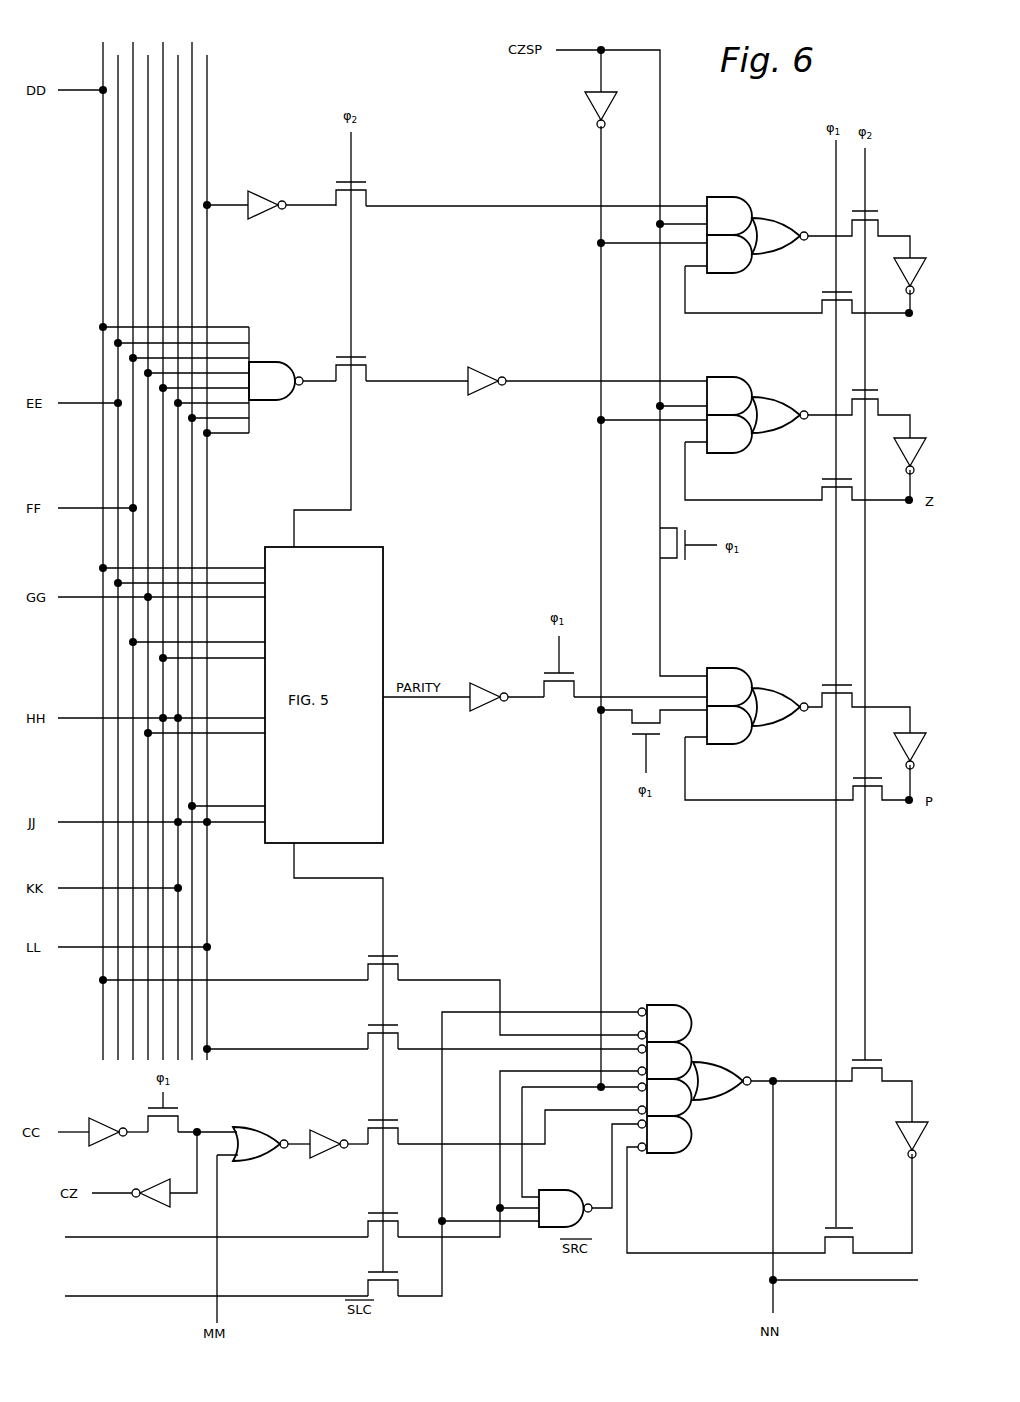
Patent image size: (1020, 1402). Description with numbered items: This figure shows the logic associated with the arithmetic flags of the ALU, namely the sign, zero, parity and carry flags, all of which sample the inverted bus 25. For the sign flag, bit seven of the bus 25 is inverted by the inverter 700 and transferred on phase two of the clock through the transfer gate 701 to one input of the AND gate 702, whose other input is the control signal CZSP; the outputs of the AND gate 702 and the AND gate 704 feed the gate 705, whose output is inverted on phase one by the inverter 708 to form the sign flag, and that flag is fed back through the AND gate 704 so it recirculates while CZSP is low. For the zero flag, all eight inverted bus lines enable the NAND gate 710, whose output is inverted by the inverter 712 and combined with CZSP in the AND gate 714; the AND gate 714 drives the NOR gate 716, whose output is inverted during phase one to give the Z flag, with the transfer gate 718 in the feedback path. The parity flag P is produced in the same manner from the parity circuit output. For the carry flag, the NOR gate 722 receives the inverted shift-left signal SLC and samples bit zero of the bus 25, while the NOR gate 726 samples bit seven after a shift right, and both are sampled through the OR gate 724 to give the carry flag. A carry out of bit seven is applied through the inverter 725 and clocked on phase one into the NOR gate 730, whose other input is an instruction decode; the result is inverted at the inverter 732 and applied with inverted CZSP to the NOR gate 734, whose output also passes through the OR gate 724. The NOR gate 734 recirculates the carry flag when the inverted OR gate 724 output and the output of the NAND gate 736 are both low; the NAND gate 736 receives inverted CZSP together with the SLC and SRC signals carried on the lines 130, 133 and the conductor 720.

The bus 25 is at (250, 108).
The inverter 700 is at (268, 202).
The transfer gate 701 is at (370, 183).
The AND gate 702 is at (728, 197).
The AND gate 704 is at (749, 264).
The OR gate 705 is at (780, 217).
The inverter 708 is at (879, 219).
The NAND gate 710 is at (272, 366).
The inverter 712 is at (487, 373).
The AND gate 714 is at (729, 378).
The NOR gate 716 is at (781, 398).
The transistor 718 is at (881, 398).
The conductor 720 is at (445, 1285).
The NOR gate 722 is at (665, 1023).
The OR gate 724 is at (715, 1066).
The inverter 725 is at (104, 1126).
The NOR gate 726 is at (665, 1060).
The NOR gate 730 is at (254, 1160).
The inverter 732 is at (318, 1130).
The NOR gate 734 is at (665, 1116).
The NAND gate 736 is at (562, 1198).
The S line 130 is at (160, 1237).
The R line 133 is at (170, 1296).